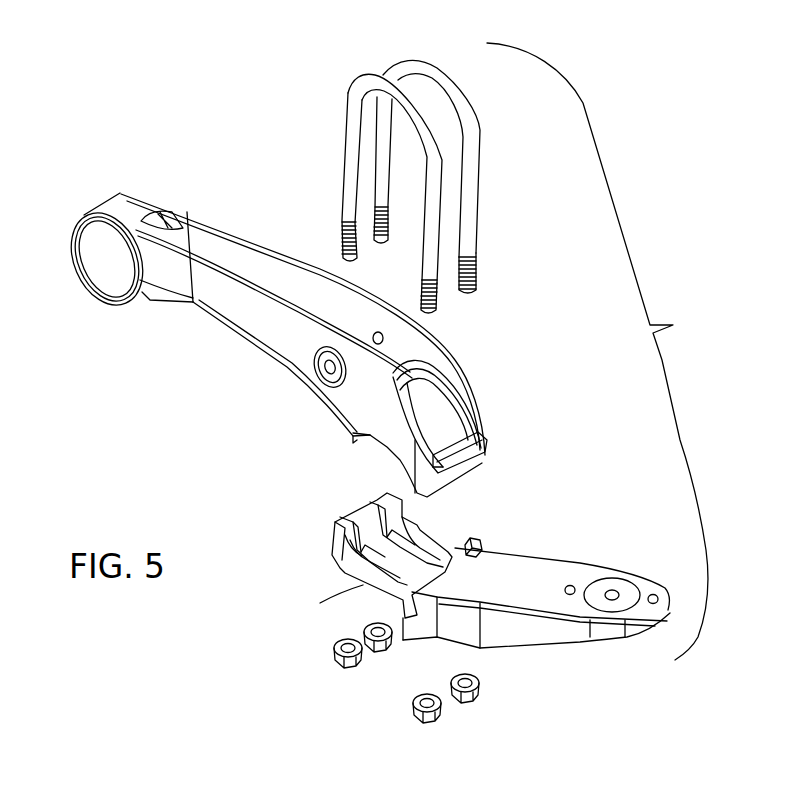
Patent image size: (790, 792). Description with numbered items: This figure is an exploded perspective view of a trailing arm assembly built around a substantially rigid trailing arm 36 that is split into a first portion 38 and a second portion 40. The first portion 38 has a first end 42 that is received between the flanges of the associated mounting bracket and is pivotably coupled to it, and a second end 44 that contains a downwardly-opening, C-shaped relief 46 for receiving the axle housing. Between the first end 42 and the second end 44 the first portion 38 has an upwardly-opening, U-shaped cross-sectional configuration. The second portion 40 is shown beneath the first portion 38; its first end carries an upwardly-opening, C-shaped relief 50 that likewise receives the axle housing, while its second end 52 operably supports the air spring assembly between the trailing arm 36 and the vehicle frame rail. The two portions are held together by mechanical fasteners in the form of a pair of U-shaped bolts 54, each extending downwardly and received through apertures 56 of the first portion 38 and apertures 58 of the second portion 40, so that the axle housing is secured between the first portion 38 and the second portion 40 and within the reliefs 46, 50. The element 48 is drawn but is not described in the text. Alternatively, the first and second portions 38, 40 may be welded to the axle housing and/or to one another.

The trailing arm 36 is at (597, 351).
The first portion 38 is at (304, 314).
The second portion 40 is at (495, 598).
The first end 42 is at (153, 257).
The second end 44 is at (387, 410).
The C-shaped relief 46 is at (363, 438).
The lower clamp block 48 is at (394, 556).
The C-shaped relief 50 is at (430, 545).
The second end 52 is at (591, 637).
The U-shaped bolts 54 is at (403, 68).
The apertures 56 is at (481, 456).
The apertures 58 is at (482, 548).